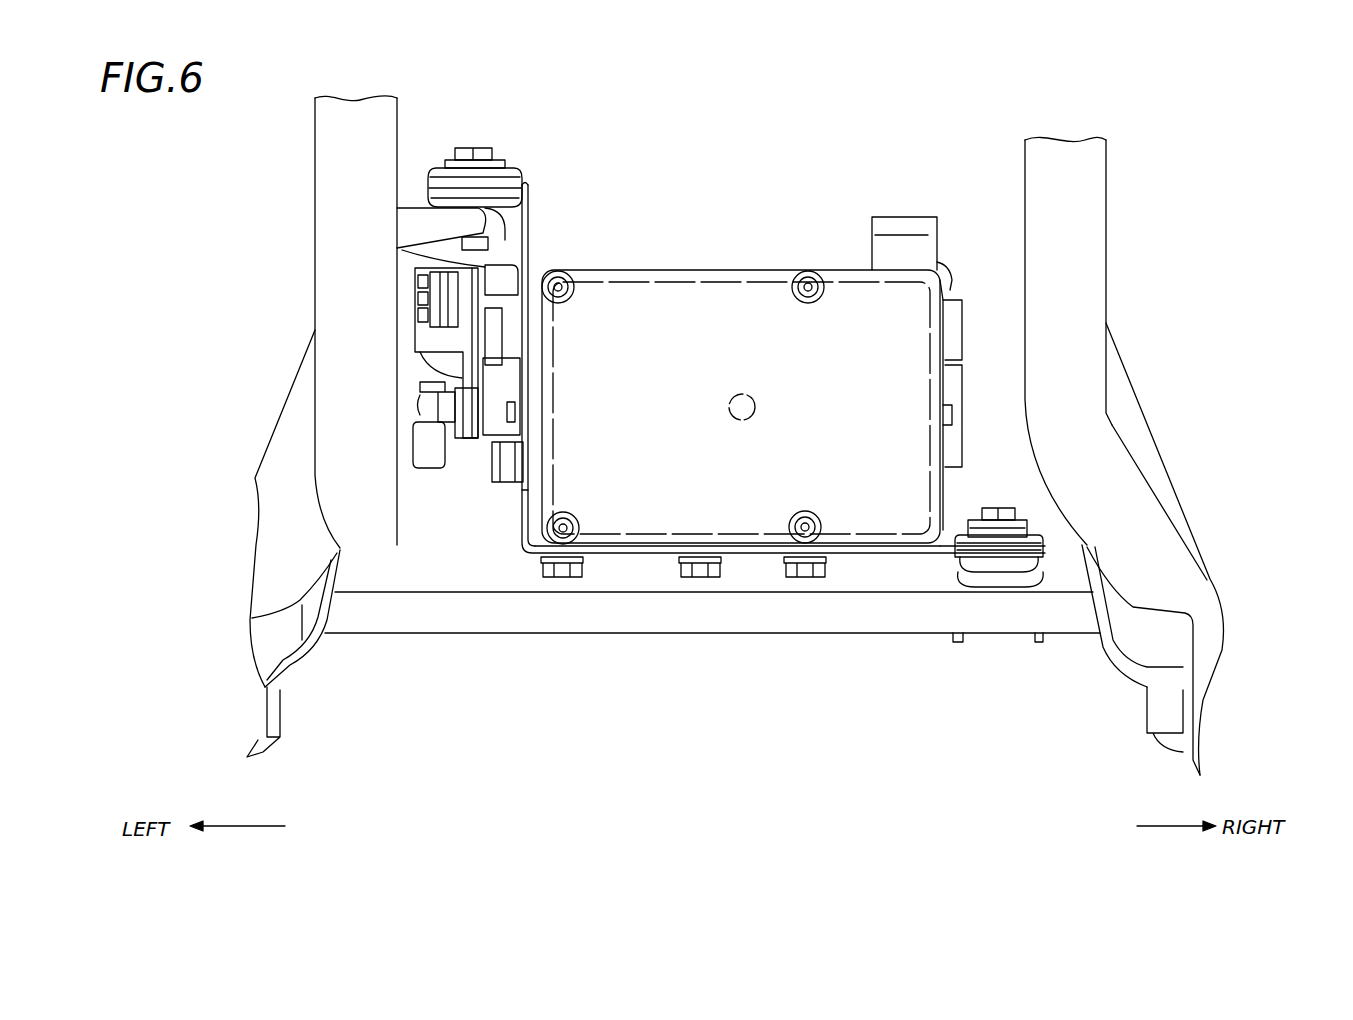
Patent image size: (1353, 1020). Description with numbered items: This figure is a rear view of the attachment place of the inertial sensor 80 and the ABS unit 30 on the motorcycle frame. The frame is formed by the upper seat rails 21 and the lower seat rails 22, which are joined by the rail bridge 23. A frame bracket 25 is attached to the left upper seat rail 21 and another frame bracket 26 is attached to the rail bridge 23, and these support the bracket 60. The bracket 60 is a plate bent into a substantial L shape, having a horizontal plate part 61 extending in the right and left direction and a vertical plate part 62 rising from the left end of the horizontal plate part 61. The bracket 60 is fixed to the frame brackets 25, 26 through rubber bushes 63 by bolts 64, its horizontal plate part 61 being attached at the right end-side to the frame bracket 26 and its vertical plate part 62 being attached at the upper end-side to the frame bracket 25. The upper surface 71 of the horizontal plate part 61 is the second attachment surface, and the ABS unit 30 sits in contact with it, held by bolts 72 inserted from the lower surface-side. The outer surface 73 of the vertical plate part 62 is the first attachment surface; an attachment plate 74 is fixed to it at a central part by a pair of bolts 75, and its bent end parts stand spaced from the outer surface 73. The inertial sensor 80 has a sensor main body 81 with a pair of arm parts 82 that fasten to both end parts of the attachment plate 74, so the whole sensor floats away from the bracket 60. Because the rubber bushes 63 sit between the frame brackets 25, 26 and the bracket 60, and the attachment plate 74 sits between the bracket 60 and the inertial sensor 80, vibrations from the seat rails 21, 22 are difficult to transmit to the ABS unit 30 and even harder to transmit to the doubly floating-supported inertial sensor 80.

The upper seat rail 21 is at (285, 427).
The lower seat rail 22 is at (338, 390).
The rail bridge 23 is at (427, 622).
The frame bracket 25 is at (413, 210).
The frame bracket 26 is at (957, 583).
The ABS unit 30 is at (752, 372).
The bracket 60 is at (783, 440).
The horizontal plate part 61 is at (620, 555).
The vertical plate part 62 is at (527, 232).
The rubber bush 63 is at (524, 232).
The bolt 64 is at (473, 148).
The upper surface 71 is at (710, 550).
The bolt 72 is at (560, 578).
The outer surface 73 is at (520, 502).
The attachment plate 74 is at (513, 383).
The bolt 75 is at (448, 410).
The inertial sensor 80 is at (401, 373).
The sensor main body 81 is at (420, 298).
The arm part 82 is at (472, 430).